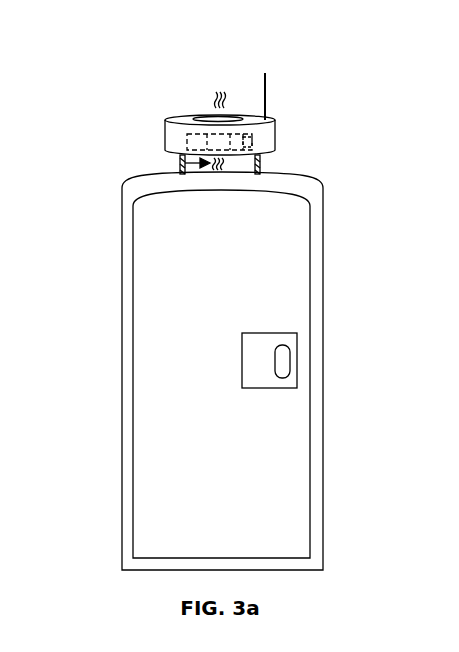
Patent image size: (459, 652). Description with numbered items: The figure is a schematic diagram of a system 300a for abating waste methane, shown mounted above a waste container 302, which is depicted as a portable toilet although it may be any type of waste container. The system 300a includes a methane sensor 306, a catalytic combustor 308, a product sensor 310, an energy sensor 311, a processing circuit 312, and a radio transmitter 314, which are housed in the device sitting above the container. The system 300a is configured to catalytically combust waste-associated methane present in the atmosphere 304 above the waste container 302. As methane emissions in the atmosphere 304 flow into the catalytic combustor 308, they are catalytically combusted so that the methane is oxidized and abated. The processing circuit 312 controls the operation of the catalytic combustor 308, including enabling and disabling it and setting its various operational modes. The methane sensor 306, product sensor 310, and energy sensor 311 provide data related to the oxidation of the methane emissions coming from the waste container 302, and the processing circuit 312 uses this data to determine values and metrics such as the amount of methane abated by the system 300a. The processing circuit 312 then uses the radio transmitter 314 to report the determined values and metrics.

The system for abating waste methane 300a is at (167, 120).
The waste container 302 is at (122, 316).
The atmosphere 304 is at (180, 164).
The methane sensor 306 is at (193, 133).
The catalytic combustor 308 is at (220, 129).
The product sensor 310 is at (232, 136).
The energy sensor 311 is at (250, 143).
The processing circuit 312 is at (228, 150).
The radio transmitter 314 is at (265, 100).